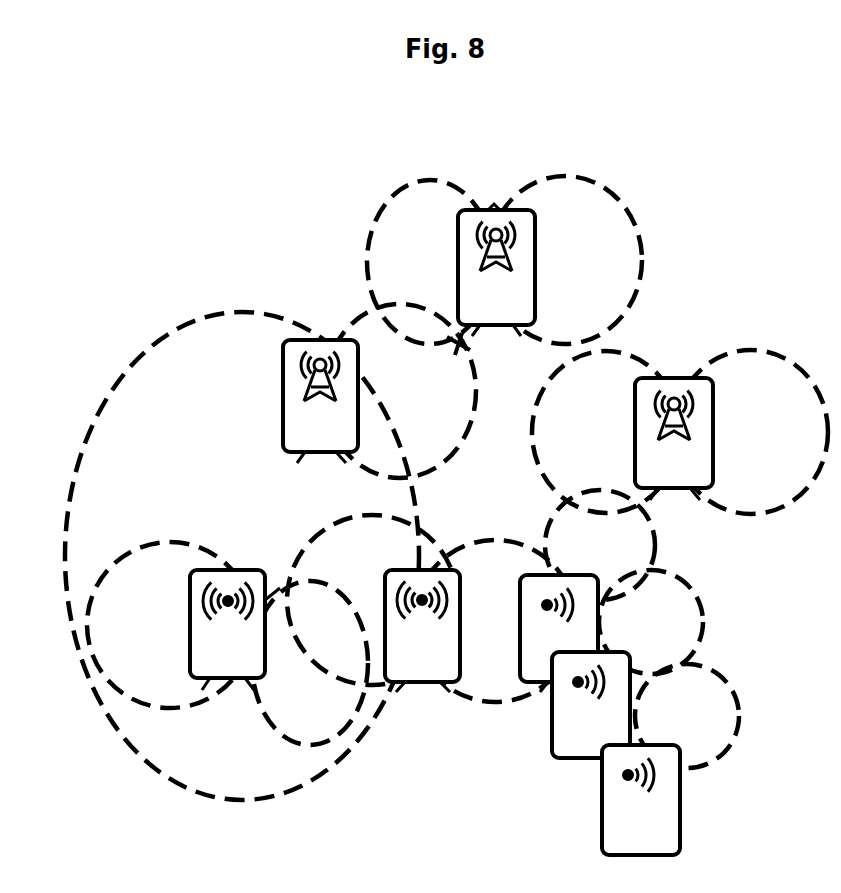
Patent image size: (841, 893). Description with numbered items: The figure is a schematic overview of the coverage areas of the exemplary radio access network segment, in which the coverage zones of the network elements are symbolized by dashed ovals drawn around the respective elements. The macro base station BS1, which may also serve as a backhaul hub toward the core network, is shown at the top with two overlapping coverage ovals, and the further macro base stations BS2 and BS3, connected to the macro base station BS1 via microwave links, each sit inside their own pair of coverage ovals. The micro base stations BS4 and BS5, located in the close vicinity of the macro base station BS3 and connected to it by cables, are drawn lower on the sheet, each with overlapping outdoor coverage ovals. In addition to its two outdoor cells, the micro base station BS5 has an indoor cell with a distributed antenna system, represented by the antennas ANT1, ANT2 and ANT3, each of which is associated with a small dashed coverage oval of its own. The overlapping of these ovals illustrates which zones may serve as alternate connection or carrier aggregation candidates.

The macro base station BS1 is at (496, 270).
The macro base station BS2 is at (674, 439).
The macro base station BS3 is at (320, 401).
The micro base station BS4 is at (235, 630).
The micro base station BS5 is at (422, 631).
The antenna ANT1 is at (559, 633).
The antenna ANT2 is at (591, 705).
The antenna ANT3 is at (641, 800).